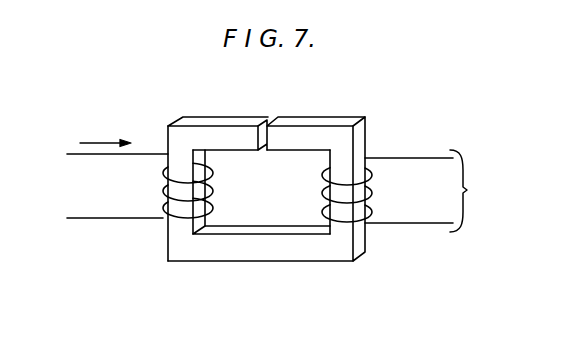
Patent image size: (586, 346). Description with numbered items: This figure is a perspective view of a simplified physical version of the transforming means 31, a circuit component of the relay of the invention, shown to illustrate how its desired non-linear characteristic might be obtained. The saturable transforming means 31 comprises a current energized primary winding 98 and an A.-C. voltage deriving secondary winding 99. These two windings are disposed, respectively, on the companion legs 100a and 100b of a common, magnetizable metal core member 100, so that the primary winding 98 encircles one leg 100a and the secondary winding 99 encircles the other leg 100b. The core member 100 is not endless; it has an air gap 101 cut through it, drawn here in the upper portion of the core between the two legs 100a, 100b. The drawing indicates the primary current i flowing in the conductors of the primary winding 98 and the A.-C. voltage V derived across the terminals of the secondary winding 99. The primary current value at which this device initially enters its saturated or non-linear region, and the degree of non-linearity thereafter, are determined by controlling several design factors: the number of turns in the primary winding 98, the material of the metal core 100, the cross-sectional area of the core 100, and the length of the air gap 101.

The saturable transforming means 31 is at (268, 292).
The magnetizable metal core member 100 is at (262, 240).
The leg of core member 100a is at (181, 224).
The leg of core member 100b is at (342, 230).
The air gap 101 is at (263, 128).
The primary winding 98 is at (161, 193).
The secondary winding 99 is at (370, 194).
The current i is at (101, 142).
The output voltage V is at (467, 190).